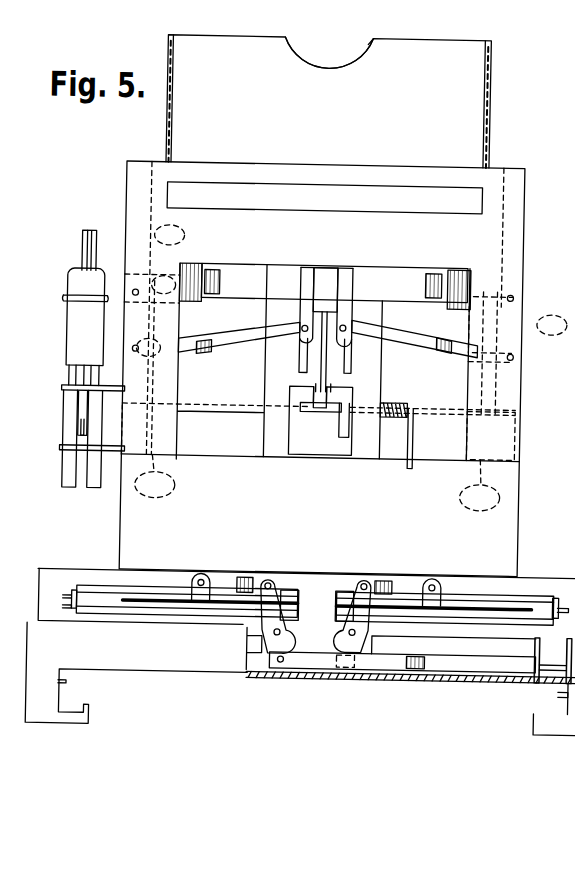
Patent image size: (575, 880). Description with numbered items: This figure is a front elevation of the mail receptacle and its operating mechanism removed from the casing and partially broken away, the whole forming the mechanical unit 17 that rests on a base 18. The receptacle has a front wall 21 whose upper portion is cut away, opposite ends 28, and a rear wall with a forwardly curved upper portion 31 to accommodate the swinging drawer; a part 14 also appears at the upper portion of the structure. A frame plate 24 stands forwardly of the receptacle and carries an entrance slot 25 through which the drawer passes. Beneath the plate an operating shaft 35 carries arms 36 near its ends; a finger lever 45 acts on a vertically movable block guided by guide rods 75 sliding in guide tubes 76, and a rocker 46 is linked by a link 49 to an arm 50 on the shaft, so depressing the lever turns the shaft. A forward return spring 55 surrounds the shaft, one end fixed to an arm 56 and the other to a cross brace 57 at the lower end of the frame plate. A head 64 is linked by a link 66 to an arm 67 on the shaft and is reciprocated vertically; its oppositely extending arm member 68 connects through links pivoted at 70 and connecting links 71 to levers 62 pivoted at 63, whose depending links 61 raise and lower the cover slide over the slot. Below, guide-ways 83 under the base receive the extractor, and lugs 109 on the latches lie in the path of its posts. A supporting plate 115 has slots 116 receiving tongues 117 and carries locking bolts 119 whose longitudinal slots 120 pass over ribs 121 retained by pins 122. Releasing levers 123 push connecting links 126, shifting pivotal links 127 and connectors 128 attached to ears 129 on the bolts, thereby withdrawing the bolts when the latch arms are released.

The notch 14 is at (323, 62).
The mechanical unit 17 is at (301, 368).
The base 18 is at (136, 674).
The front wall 21 is at (314, 476).
The frame plate 24 is at (490, 426).
The entrance slot 25 is at (318, 179).
The ends of the receptacle 28 is at (486, 63).
The forwardly curved upper portion 31 is at (353, 44).
The operating shaft 35 is at (215, 405).
The arms 36 is at (317, 491).
The finger engaging operating lever 45 is at (69, 302).
The rocker 46 is at (84, 242).
The link 49 is at (102, 401).
The arm 50 is at (87, 413).
The forward return spring 55 is at (397, 400).
The arm 56 is at (348, 419).
The cross brace 57 is at (451, 454).
The depending links 61 is at (309, 266).
The levers 62 is at (242, 335).
The pivot 63 is at (516, 350).
The head 64 is at (323, 296).
The link 66 is at (334, 348).
The arm 67 is at (325, 393).
The arm member 68 is at (392, 280).
The pivot 70 is at (515, 291).
The connecting links 71 is at (360, 280).
The guide rods 75 is at (74, 381).
The guide tubes 76 is at (103, 469).
The guide-ways 83 is at (58, 715).
The lug 109 is at (77, 683).
The supporting plate 115 is at (46, 574).
The slots 116 is at (73, 597).
The tongues 117 is at (72, 609).
The locking bolts 119 is at (534, 602).
The longitudinal slots 120 is at (143, 603).
The ribs 121 is at (235, 595).
The pins 122 is at (185, 596).
The releasing levers 123 is at (574, 708).
The connecting links 126 is at (377, 658).
The pivotal links 127 is at (293, 582).
The connectors 128 is at (235, 581).
The ears 129 is at (200, 577).